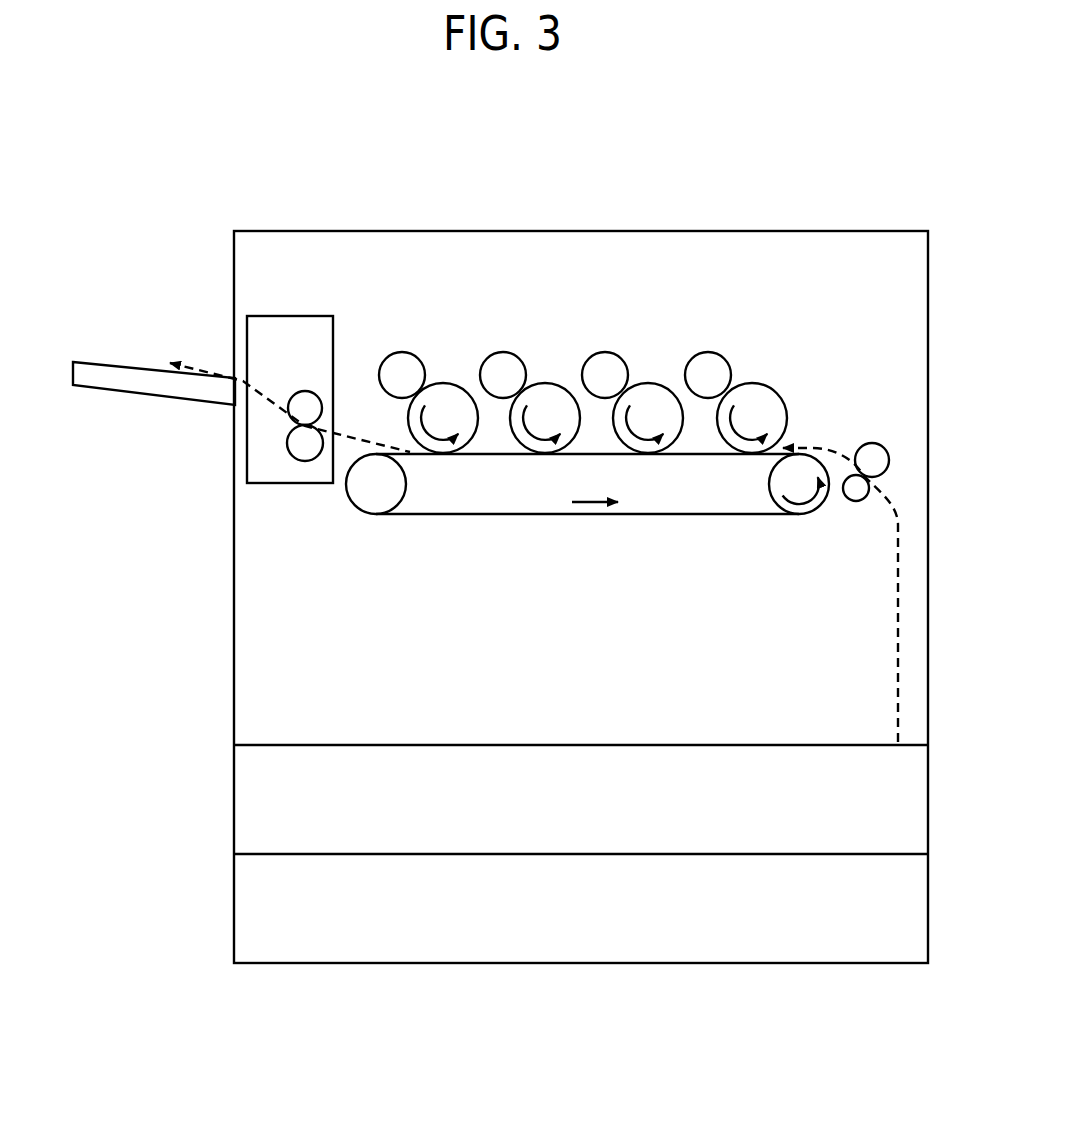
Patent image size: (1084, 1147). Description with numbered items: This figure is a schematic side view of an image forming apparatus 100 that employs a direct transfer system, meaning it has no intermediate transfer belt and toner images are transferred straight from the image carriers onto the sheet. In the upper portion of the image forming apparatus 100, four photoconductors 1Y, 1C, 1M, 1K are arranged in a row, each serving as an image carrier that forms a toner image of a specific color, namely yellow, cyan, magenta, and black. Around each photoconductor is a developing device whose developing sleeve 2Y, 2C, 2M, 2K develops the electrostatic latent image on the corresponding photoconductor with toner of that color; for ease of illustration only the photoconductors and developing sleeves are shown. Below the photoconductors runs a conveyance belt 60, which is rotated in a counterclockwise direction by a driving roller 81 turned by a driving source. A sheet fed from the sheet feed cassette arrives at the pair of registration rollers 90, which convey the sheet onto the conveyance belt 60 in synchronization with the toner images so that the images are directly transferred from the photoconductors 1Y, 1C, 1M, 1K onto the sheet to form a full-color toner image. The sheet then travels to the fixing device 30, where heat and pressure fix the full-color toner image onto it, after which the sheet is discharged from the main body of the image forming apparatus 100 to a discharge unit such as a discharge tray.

The image forming apparatus 100 is at (808, 202).
The fixing device 30 is at (291, 307).
The developing sleeve 2Y is at (402, 356).
The photoconductor 1Y is at (445, 386).
The developing sleeve 2C is at (504, 356).
The photoconductor 1C is at (547, 386).
The developing sleeve 2M is at (606, 356).
The photoconductor 1M is at (650, 386).
The developing sleeve 2K is at (709, 356).
The photoconductor 1K is at (754, 386).
The conveyance belt 60 is at (499, 516).
The driving roller 81 is at (811, 516).
The pair of registration rollers 90 is at (847, 446).